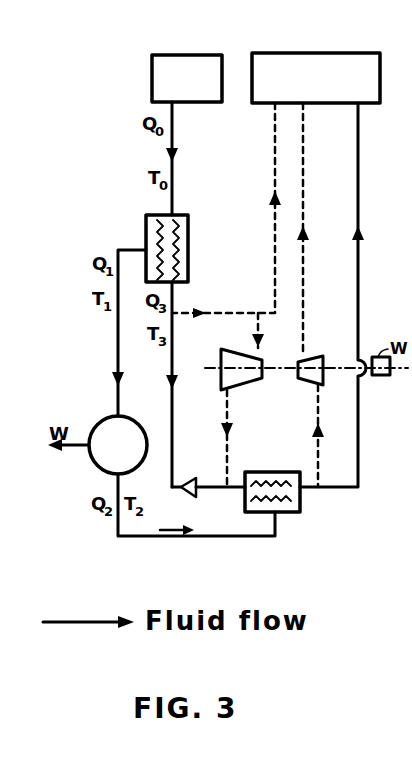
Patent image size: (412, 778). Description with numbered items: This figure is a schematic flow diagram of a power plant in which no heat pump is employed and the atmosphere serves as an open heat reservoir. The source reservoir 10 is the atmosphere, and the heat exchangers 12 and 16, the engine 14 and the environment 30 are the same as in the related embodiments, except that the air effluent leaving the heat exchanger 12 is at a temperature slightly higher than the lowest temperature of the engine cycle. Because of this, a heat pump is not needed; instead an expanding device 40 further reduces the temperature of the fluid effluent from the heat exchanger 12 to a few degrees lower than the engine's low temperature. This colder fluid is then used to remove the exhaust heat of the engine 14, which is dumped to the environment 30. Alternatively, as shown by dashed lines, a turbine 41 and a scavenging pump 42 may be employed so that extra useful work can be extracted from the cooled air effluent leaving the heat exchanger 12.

The source reservoir 10 is at (170, 55).
The heat exchanger 12 is at (188, 248).
The engine 14 is at (126, 419).
The heat exchanger 16 is at (301, 505).
The environment 30 is at (288, 53).
The expanding device 40 is at (185, 480).
The turbine 41 is at (236, 390).
The scavenging pump 42 is at (306, 358).